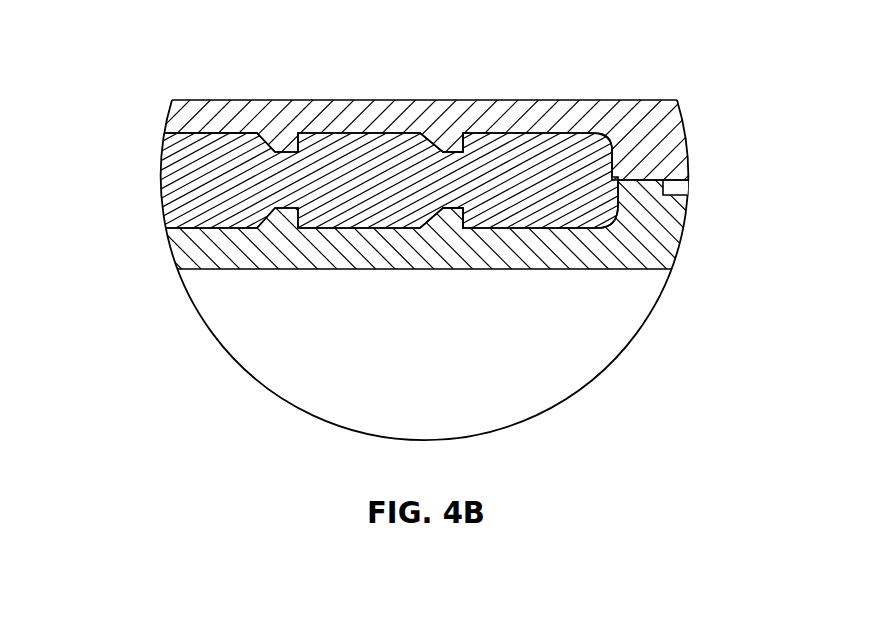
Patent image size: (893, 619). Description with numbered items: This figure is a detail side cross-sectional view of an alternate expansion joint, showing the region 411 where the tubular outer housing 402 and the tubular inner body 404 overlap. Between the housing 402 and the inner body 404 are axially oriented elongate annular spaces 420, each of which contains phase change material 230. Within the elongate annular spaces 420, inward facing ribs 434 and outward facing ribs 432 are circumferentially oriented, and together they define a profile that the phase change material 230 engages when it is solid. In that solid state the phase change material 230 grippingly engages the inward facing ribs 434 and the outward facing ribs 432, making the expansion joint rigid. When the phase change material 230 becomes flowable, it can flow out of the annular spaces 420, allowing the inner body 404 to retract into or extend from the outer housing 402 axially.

The cross-sectional view of electrode assembly 411 is at (133, 52).
The phase change material 230 is at (357, 131).
The inward facing ribs 434 is at (455, 150).
The elongate annular spaces 420 is at (533, 145).
The tubular outer housing 402 is at (665, 142).
The tubular inner body 404 is at (680, 230).
The outward facing ribs 432 is at (455, 210).